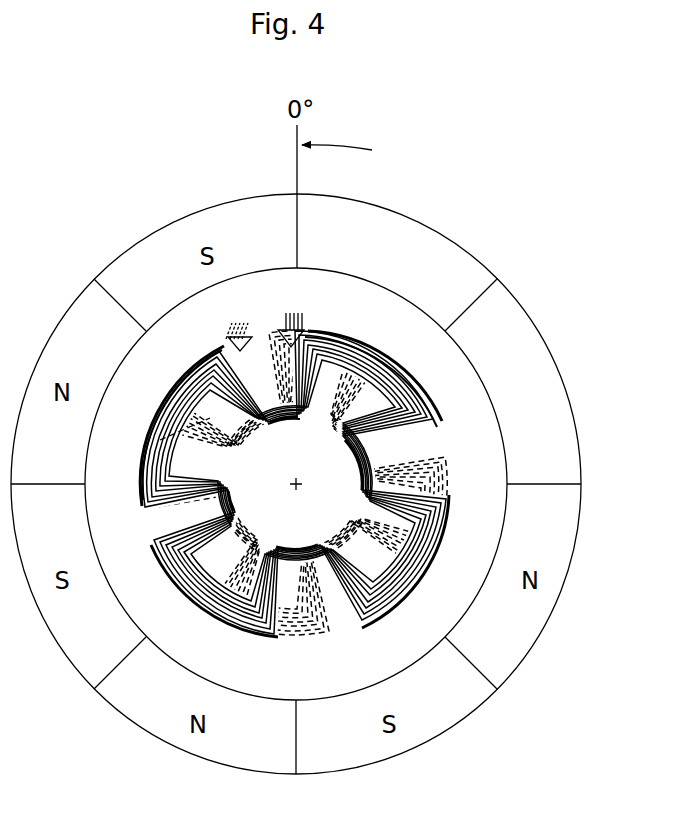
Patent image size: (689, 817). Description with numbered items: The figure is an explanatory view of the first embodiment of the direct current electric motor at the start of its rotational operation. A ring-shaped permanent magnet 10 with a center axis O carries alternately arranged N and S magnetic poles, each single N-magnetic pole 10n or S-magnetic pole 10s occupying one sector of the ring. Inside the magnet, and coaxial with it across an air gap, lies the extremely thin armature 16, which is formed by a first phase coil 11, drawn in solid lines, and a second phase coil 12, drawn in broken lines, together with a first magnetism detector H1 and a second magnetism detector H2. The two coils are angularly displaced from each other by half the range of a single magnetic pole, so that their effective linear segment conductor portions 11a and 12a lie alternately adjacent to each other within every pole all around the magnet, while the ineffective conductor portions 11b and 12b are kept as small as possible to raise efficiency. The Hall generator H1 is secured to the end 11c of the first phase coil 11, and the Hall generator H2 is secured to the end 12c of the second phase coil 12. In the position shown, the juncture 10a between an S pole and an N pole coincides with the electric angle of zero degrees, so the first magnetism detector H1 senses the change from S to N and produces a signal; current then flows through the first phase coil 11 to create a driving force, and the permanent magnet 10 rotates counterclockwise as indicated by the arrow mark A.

The permanent magnet 10 is at (428, 222).
The juncture 10a is at (297, 217).
The N-magnetic pole 10n is at (478, 258).
The S-magnetic pole 10s is at (543, 328).
The first phase coil 11 is at (350, 371).
The effective linear segment conductor portion 11a is at (190, 374).
The ineffective conductor portion 11b is at (283, 419).
The end of first phase coil 11c is at (292, 313).
The second phase coil 12 is at (378, 398).
The effective linear segment conductor portion 12a is at (187, 428).
The ineffective conductor portion 12b is at (245, 442).
The end of second phase coil 12c is at (231, 322).
The armature 16 is at (356, 329).
The first magnetism detector H1 is at (304, 331).
The second magnetism detector H2 is at (248, 337).
The center axis O is at (300, 481).
The arrow mark A is at (326, 147).